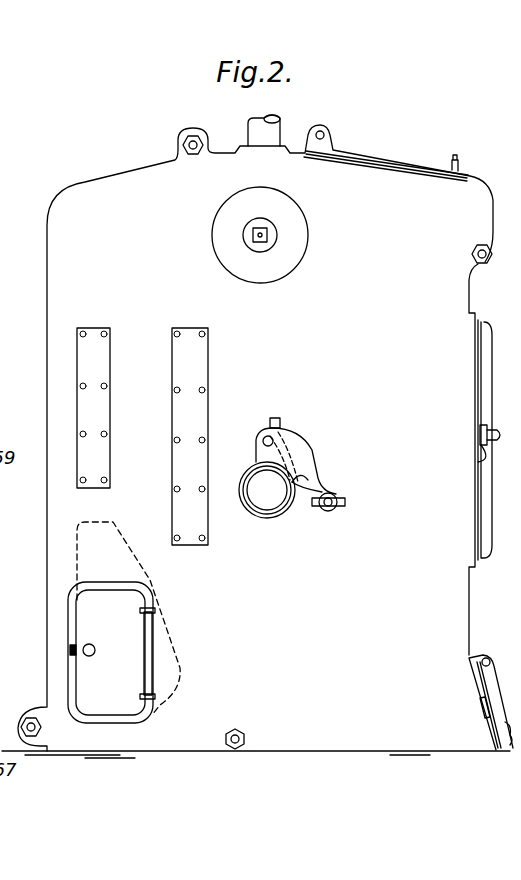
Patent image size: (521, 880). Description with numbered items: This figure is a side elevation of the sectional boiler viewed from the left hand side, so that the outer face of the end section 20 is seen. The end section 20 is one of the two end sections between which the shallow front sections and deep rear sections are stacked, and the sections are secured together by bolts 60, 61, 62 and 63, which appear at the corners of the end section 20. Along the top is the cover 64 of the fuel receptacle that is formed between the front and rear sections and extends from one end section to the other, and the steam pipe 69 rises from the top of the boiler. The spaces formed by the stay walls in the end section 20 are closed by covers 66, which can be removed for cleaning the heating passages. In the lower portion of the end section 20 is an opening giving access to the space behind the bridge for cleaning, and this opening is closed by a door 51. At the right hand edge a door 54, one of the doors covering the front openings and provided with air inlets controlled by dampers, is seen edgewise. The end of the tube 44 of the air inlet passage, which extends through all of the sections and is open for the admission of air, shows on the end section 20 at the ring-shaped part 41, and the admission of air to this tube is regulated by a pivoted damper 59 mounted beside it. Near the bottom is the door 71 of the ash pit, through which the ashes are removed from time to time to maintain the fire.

The end section 20 is at (256, 441).
The ring 41 is at (262, 498).
The tube 44 is at (285, 512).
The door 51 is at (124, 622).
The door 54 is at (490, 384).
The pivoted damper 59 is at (316, 458).
The bolt 60 is at (190, 143).
The bolt 61 is at (493, 257).
The bolt 62 is at (31, 718).
The bolt 63 is at (245, 731).
The cover 64 is at (420, 153).
The cover 66 is at (172, 350).
The steam pipe 69 is at (280, 126).
The door 71 is at (492, 698).